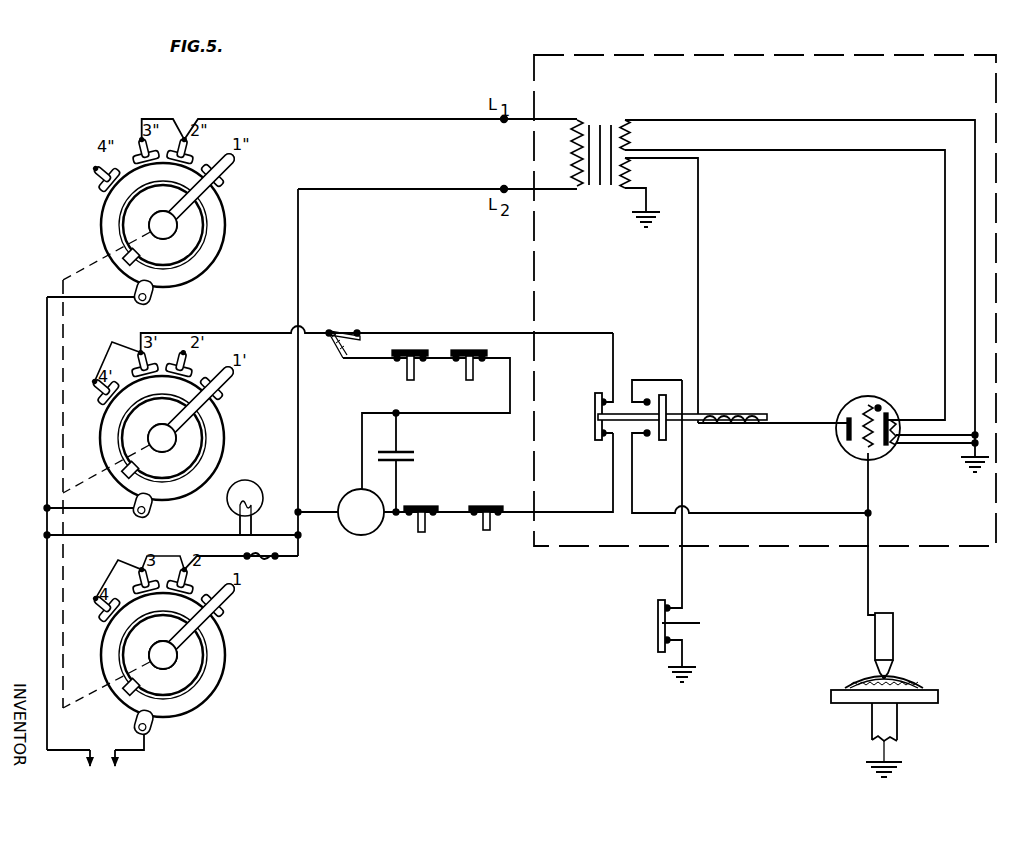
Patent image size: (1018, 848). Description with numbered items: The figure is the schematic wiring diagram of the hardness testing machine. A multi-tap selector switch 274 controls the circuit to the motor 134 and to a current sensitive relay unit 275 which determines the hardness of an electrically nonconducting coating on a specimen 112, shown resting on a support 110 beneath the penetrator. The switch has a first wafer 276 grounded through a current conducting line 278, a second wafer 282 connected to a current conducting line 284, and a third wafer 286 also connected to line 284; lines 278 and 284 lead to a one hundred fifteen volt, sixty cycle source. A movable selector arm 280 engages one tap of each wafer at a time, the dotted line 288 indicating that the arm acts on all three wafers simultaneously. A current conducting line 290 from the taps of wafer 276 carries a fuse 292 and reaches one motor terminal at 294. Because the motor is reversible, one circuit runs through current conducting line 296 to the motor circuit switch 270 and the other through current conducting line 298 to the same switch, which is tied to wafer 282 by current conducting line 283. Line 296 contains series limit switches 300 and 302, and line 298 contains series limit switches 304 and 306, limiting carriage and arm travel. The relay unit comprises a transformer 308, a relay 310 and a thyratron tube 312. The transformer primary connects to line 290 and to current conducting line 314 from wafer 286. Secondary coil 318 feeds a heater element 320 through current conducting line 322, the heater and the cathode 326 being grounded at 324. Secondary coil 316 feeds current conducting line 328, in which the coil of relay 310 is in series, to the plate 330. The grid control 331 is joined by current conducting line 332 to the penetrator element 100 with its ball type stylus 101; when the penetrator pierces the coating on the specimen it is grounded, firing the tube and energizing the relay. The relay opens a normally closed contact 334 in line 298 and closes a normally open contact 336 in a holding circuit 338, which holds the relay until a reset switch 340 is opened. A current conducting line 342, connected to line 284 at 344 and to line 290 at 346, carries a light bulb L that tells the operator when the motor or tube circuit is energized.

The penetrator element 100 is at (893, 640).
The ball type stylus 101 is at (892, 672).
The work table 110 is at (938, 696).
The specimen 112 is at (860, 676).
The motor 134 is at (370, 532).
The motor circuit switch 270 is at (352, 326).
The multi-tap selector switch 274 is at (226, 206).
The current sensitive relay unit 275 is at (534, 72).
The first wafer 276 is at (224, 683).
The current conducting line 278 is at (150, 748).
The movable selector arm 280 is at (208, 626).
The second wafer 282 is at (224, 449).
The current conducting line 283 is at (238, 333).
The current conducting line 284 is at (47, 470).
The third wafer 286 is at (224, 245).
The dotted line 288 is at (90, 256).
The current conducting line 290 is at (298, 391).
The fuse 292 is at (266, 562).
The motor terminal connection 294 is at (340, 506).
The current conducting line 296 is at (440, 413).
The current conducting line 298 is at (550, 513).
The limit switch 300 is at (408, 350).
The limit switch 302 is at (466, 350).
The limit switch 304 is at (428, 522).
The limit switch 306 is at (488, 506).
The transformer 308 is at (612, 125).
The relay 310 is at (712, 410).
The thyratron tube 312 is at (872, 395).
The current conducting line 314 is at (328, 119).
The secondary coil 316 is at (628, 180).
The secondary coil 318 is at (630, 135).
The heater element 320 is at (890, 412).
The current conducting line 322 is at (888, 152).
The ground connection 324 is at (970, 458).
The cathode 326 is at (884, 448).
The current conducting line 328 is at (698, 290).
The plate 330 is at (846, 414).
The grid control 331 is at (860, 398).
The current conducting line 332 is at (868, 578).
The normally closed contact 334 is at (594, 410).
The normally open contact 336 is at (668, 400).
The holding circuit 338 is at (682, 578).
The reset switch 340 is at (658, 618).
The current conducting line 342 is at (162, 535).
The connection point 344 is at (72, 508).
The connection point 346 is at (300, 536).
The light bulb L is at (255, 484).